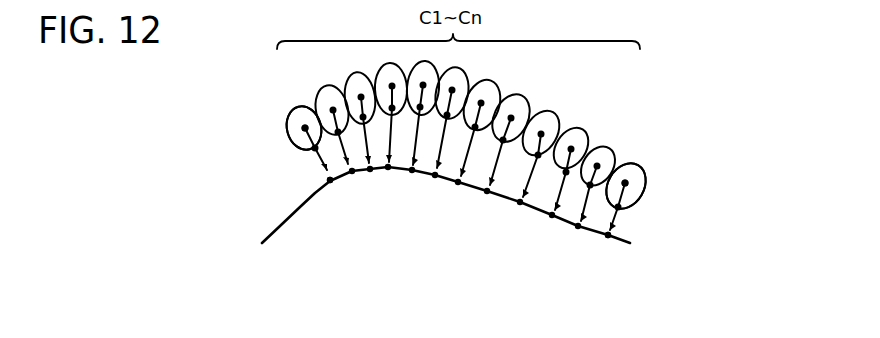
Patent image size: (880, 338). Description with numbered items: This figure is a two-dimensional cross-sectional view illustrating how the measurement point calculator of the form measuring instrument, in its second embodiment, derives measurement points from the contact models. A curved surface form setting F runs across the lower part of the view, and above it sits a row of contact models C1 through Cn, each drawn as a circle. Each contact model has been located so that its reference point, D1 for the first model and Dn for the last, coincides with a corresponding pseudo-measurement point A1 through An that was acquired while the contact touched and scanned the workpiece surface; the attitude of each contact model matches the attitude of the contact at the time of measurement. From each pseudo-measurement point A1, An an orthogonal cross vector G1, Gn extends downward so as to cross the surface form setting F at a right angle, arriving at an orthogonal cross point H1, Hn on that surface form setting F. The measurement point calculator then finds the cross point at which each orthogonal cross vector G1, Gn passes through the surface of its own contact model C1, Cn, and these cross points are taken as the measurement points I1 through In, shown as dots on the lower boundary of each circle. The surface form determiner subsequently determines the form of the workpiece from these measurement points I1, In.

The contact model C1 is at (631, 157).
The contact model Cn is at (303, 107).
The reference point of contact model D1 is at (627, 183).
The pseudo-measurement point A1 is at (680, 175).
The reference point of contact model Dn is at (303, 128).
The pseudo-measurement point An is at (256, 121).
The measurement point I1 is at (622, 207).
The measurement point In is at (314, 152).
The surface form setting F is at (277, 232).
The orthogonal cross vector G1 is at (612, 234).
The orthogonal cross vector Gn is at (327, 175).
The orthogonal cross point H1 is at (605, 238).
The orthogonal cross point Hn is at (332, 183).